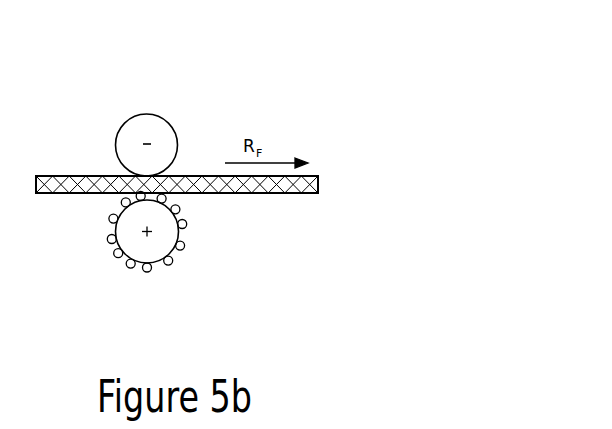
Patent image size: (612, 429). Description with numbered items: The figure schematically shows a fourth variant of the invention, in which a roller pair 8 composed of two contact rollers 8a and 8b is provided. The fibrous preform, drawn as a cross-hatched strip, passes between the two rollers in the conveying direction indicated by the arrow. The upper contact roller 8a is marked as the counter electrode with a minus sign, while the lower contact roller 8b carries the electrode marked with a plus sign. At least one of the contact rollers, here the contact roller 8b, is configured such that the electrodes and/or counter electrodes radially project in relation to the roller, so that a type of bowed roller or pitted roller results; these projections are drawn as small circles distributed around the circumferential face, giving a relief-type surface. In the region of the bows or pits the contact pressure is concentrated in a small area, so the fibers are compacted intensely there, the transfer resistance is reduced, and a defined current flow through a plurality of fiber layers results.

The roller pair 8 is at (177, 154).
The contact roller 8a is at (185, 117).
The contact roller 8b is at (183, 230).